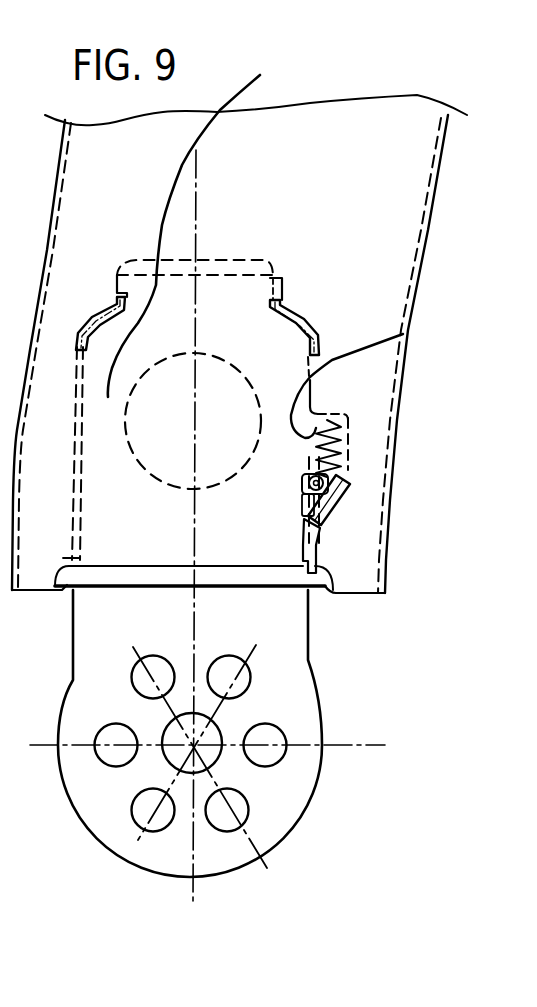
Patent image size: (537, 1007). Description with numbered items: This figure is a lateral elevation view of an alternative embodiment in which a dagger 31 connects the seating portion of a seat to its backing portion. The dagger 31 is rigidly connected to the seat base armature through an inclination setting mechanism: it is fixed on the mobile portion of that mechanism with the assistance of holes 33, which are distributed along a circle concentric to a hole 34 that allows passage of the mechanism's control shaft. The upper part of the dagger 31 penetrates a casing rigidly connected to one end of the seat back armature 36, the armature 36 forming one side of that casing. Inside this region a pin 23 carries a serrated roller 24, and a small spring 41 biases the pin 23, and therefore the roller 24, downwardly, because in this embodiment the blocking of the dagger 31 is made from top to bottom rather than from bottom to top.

The pin 23 is at (340, 500).
The serrated roller 24 is at (332, 522).
The dagger 31 is at (423, 642).
The holes 33 is at (247, 687).
The hole 34 is at (222, 757).
The seat back armature 36 is at (395, 202).
The small spring 41 is at (403, 334).